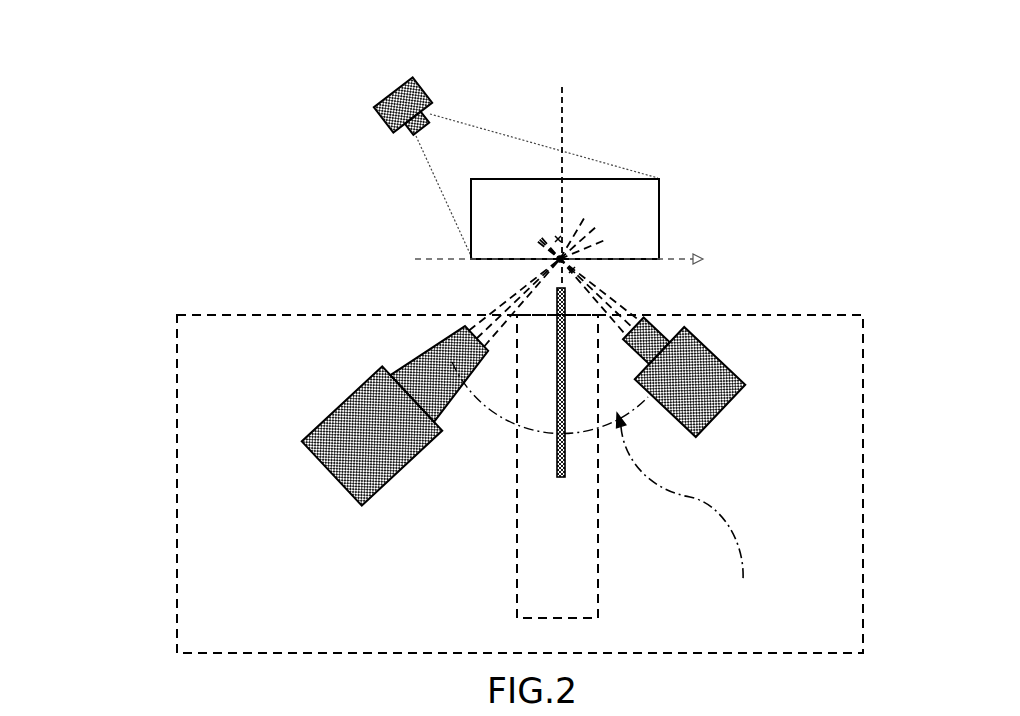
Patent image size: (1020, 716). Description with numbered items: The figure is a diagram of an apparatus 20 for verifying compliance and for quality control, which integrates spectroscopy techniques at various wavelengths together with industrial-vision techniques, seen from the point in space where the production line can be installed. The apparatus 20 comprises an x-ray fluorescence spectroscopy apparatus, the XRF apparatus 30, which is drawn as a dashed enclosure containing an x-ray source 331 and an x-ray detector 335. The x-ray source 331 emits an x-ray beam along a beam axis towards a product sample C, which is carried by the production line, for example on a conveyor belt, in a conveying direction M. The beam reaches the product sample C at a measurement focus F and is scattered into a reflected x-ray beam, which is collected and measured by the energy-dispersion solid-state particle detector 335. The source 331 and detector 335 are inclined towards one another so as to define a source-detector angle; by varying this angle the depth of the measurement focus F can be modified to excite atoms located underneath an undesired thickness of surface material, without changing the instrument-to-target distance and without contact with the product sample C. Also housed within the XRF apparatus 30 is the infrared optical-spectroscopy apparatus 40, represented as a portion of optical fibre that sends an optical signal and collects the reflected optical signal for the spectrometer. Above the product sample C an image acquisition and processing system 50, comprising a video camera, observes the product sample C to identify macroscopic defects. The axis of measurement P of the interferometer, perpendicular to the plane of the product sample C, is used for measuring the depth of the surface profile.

The apparatus 20 is at (193, 242).
The XRF apparatus 30 is at (177, 412).
The infrared optical-spectroscopy apparatus 40 is at (555, 493).
The image acquisition and processing system 50 is at (450, 140).
The x-ray source 331 is at (340, 386).
The x-ray detector 335 is at (718, 416).
The product sample C is at (632, 193).
The measurement focus F is at (426, 239).
The axis of measurement P is at (583, 185).
The conveying direction M is at (579, 258).